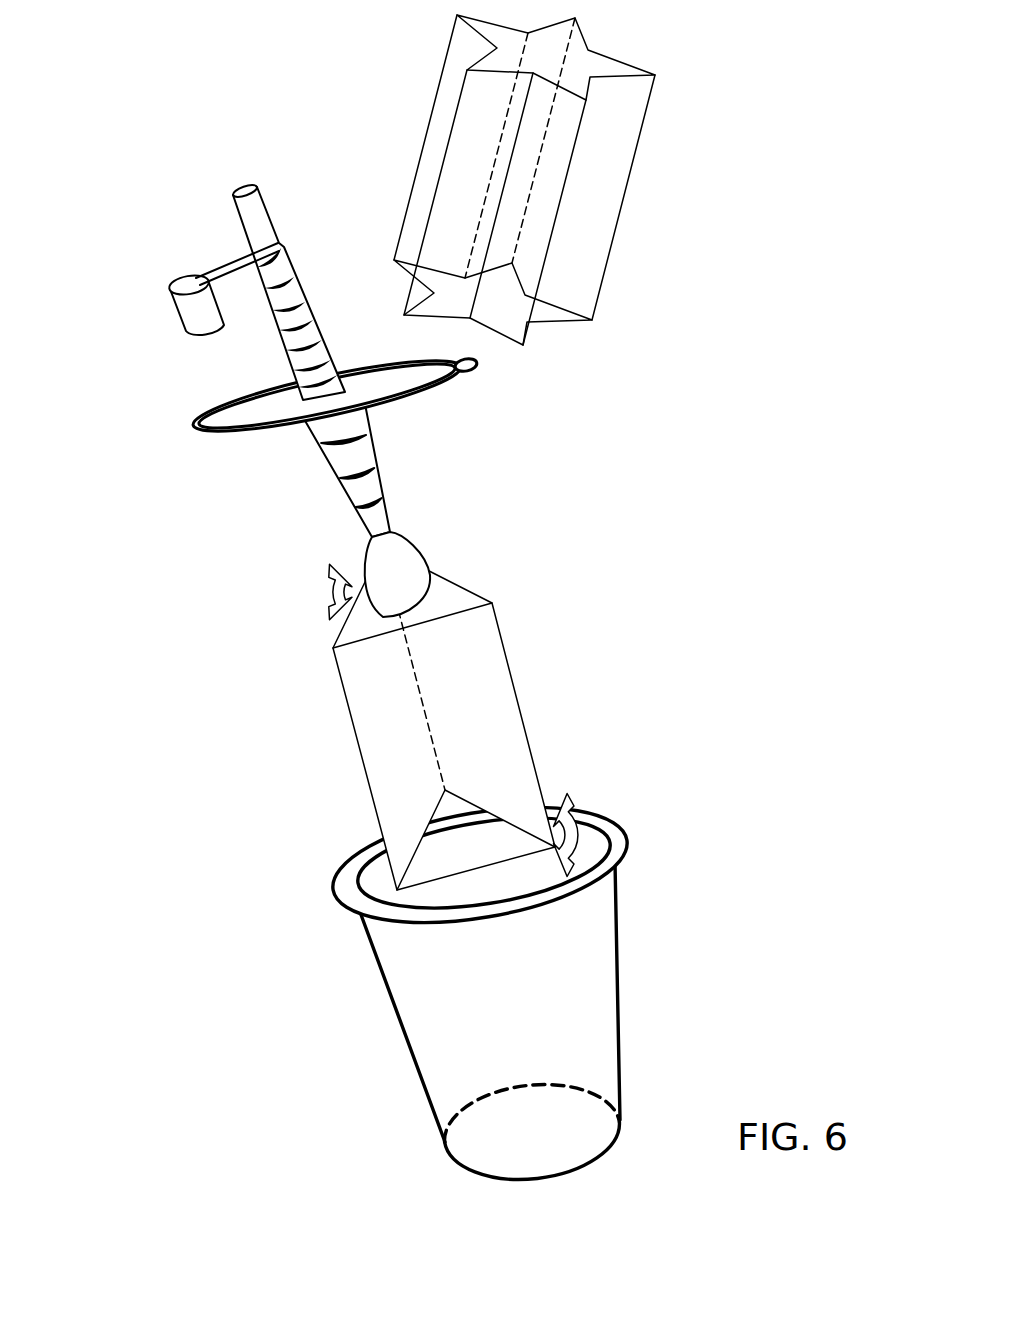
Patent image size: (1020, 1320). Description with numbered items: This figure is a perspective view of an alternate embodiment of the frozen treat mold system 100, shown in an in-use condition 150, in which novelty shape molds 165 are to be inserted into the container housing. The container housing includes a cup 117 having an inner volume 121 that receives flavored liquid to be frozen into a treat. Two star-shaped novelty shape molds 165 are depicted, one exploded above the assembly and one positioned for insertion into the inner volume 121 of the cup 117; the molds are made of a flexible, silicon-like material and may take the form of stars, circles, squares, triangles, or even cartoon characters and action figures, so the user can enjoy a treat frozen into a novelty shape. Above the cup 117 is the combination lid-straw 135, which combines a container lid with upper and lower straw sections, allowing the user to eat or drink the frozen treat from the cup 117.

The frozen treat mold system 100 is at (717, 122).
The in-use condition 150 is at (713, 202).
The novelty shape molds 165 is at (441, 80).
The combination lid-straw 135 is at (196, 422).
The inner volume 121 is at (386, 886).
The cup 117 is at (618, 928).